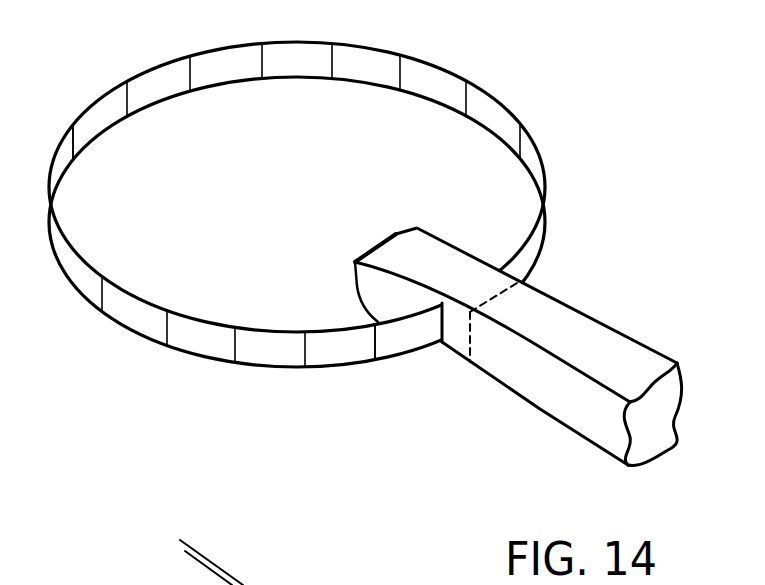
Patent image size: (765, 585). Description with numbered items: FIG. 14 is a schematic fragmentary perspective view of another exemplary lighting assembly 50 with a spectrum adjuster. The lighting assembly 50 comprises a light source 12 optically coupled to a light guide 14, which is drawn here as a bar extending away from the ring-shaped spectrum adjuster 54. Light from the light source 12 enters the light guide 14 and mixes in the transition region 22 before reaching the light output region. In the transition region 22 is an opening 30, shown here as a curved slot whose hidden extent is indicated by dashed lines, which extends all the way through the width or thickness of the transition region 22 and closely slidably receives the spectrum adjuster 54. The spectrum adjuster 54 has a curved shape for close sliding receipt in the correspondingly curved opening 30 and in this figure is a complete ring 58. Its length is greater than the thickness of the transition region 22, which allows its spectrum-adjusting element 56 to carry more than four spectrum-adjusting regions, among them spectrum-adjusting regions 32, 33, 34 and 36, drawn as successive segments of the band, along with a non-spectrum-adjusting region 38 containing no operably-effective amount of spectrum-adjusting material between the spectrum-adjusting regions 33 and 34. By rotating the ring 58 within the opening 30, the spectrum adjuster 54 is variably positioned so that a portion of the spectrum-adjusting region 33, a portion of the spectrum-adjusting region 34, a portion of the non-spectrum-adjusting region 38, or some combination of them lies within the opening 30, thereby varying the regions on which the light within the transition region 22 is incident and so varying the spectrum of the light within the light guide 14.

The light source 12 is at (376, 248).
The light guide 14 is at (478, 360).
The transition region 22 is at (457, 350).
The opening 30 is at (441, 321).
The spectrum-adjusting region 32 is at (72, 292).
The spectrum-adjusting region 33 is at (133, 322).
The spectrum-adjusting region 34 is at (270, 352).
The spectrum-adjusting region 36 is at (328, 350).
The non-spectrum-adjusting region 38 is at (199, 345).
The lighting assembly 50 is at (357, 253).
The spectrum adjuster 54 is at (306, 221).
The spectrum-adjusting element 56 is at (367, 53).
The ring 58 is at (290, 47).